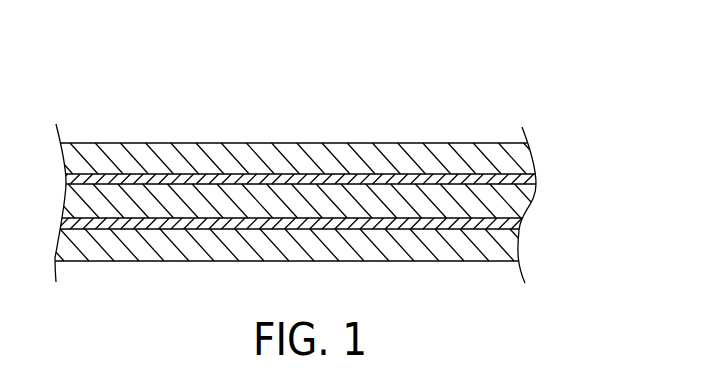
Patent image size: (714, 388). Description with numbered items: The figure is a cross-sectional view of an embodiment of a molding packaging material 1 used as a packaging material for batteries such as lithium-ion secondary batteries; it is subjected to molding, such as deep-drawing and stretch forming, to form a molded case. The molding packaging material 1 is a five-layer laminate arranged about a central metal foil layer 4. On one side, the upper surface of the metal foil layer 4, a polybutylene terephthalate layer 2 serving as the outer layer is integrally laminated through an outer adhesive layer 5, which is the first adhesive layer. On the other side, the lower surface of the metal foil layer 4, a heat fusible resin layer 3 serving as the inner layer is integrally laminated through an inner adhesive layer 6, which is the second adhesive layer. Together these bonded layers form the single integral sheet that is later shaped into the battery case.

The molding packaging material 1 is at (333, 148).
The polybutylene terephthalate layer 2 is at (517, 157).
The heat fusible resin layer 3 is at (507, 250).
The metal foil layer 4 is at (513, 199).
The outer adhesive layer 5 is at (522, 180).
The inner adhesive layer 6 is at (513, 225).